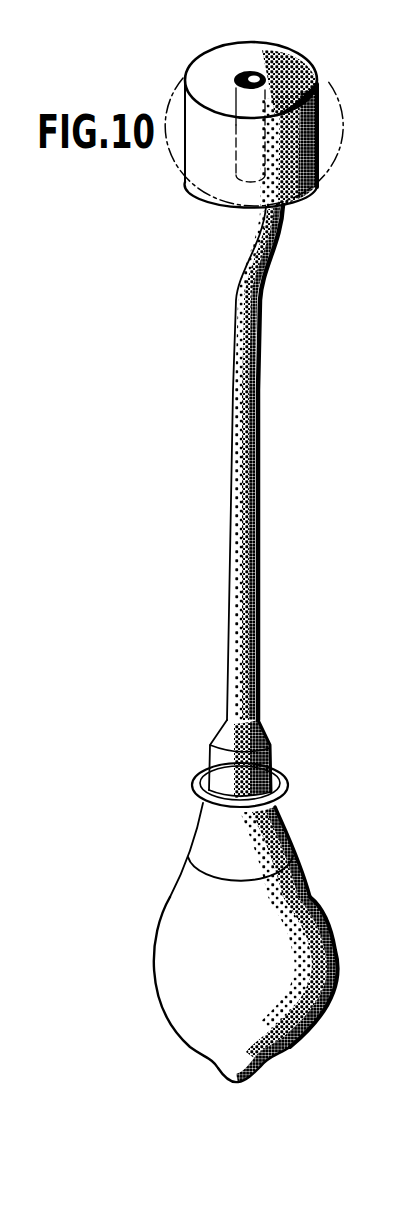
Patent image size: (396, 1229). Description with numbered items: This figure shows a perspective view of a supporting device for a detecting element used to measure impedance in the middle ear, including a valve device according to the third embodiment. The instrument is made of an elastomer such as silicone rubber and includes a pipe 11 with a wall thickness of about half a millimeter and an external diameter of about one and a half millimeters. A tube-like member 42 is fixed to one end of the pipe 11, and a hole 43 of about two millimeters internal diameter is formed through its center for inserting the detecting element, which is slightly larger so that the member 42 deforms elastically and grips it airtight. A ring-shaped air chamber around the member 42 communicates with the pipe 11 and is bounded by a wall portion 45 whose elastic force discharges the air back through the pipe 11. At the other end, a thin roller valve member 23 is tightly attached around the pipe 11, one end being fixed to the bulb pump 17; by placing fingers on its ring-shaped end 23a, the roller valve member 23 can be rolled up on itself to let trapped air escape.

The tube-like member 42 is at (277, 39).
The hole 43 is at (246, 72).
The wall portion 45 is at (313, 40).
The pipe 11 is at (260, 356).
The roller valve member 23 is at (277, 817).
The ring-shaped end 23a is at (333, 781).
The bulb pump 17 is at (327, 930).